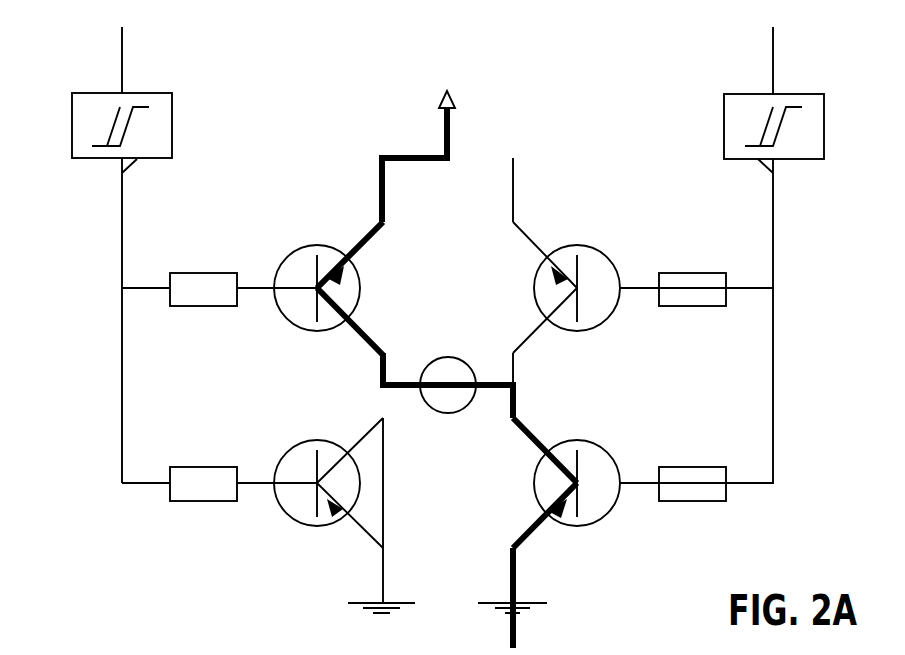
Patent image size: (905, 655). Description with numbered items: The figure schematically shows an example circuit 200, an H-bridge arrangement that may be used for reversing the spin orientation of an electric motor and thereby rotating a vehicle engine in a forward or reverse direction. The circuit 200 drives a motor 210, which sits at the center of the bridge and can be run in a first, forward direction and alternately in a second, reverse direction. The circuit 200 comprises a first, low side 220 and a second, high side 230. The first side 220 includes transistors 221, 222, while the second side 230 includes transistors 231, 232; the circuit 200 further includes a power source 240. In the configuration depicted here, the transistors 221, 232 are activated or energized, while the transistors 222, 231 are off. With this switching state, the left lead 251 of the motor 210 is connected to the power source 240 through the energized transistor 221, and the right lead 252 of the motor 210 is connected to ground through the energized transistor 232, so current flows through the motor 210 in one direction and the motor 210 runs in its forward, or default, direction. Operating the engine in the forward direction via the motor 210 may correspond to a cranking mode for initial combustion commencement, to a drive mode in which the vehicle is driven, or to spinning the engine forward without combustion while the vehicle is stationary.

The circuit 200 is at (273, 63).
The motor 210 is at (465, 338).
The first (LO) side 220 is at (63, 68).
The transistor 221 is at (307, 245).
The transistor 222 is at (306, 443).
The second (HI) side 230 is at (823, 68).
The transistor 231 is at (592, 247).
The transistor 232 is at (600, 445).
The power source 240 is at (455, 90).
The left lead 251 is at (415, 389).
The right lead 252 is at (475, 389).